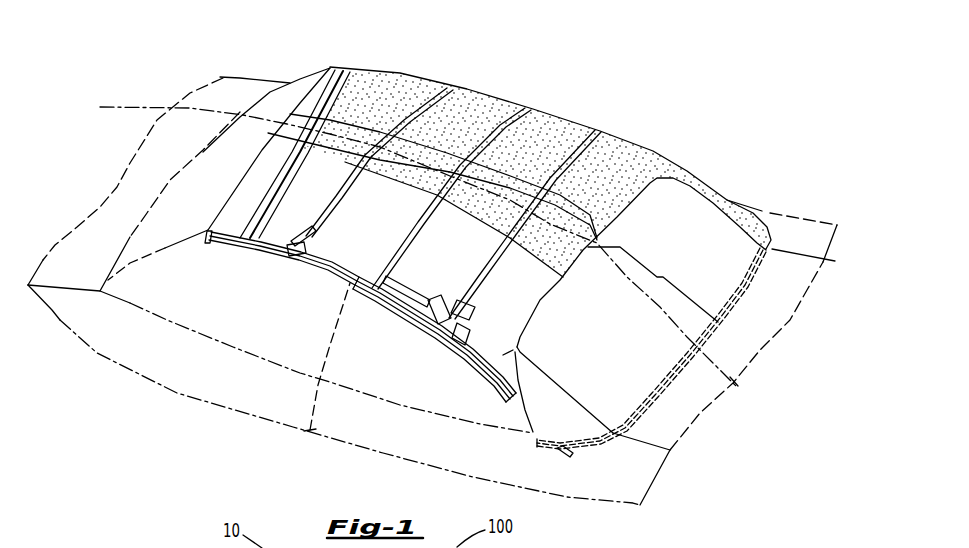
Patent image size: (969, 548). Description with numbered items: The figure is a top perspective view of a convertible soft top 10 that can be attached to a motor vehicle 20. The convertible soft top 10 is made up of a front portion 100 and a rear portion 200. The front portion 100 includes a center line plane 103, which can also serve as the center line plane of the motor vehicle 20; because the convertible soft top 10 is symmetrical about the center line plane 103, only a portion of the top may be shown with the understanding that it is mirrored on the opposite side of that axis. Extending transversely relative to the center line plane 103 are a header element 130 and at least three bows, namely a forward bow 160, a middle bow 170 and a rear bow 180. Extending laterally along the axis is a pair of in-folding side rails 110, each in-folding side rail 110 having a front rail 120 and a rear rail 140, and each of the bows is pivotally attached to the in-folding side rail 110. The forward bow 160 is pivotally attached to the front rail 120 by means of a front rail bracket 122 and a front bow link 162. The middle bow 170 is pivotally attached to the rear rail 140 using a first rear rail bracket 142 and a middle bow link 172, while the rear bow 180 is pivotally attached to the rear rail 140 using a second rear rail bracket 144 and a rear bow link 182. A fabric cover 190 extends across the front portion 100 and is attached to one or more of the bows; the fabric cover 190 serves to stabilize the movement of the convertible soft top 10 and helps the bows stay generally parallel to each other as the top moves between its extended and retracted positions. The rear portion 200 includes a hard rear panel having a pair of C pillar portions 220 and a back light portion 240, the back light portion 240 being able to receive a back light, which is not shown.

The convertible soft top 10 is at (544, 84).
The motor vehicle 20 is at (795, 231).
The front portion 100 is at (444, 158).
The center line plane 103 is at (225, 108).
The in-folding side rail 110 is at (370, 306).
The front rail 120 is at (289, 271).
The front rail bracket 122 is at (290, 244).
The header element 130 is at (265, 180).
The rear rail 140 is at (421, 335).
The first rear rail bracket 142 is at (440, 308).
The second rear rail bracket 144 is at (468, 337).
The forward bow 160 is at (352, 212).
The front bow link 162 is at (313, 232).
The middle bow 170 is at (405, 238).
The middle bow link 172 is at (403, 273).
The rear bow 180 is at (482, 265).
The rear bow link 182 is at (471, 307).
The fabric cover 190 is at (608, 150).
The rear portion 200 is at (663, 281).
The C pillar portion 220 is at (563, 412).
The back light portion 240 is at (636, 321).